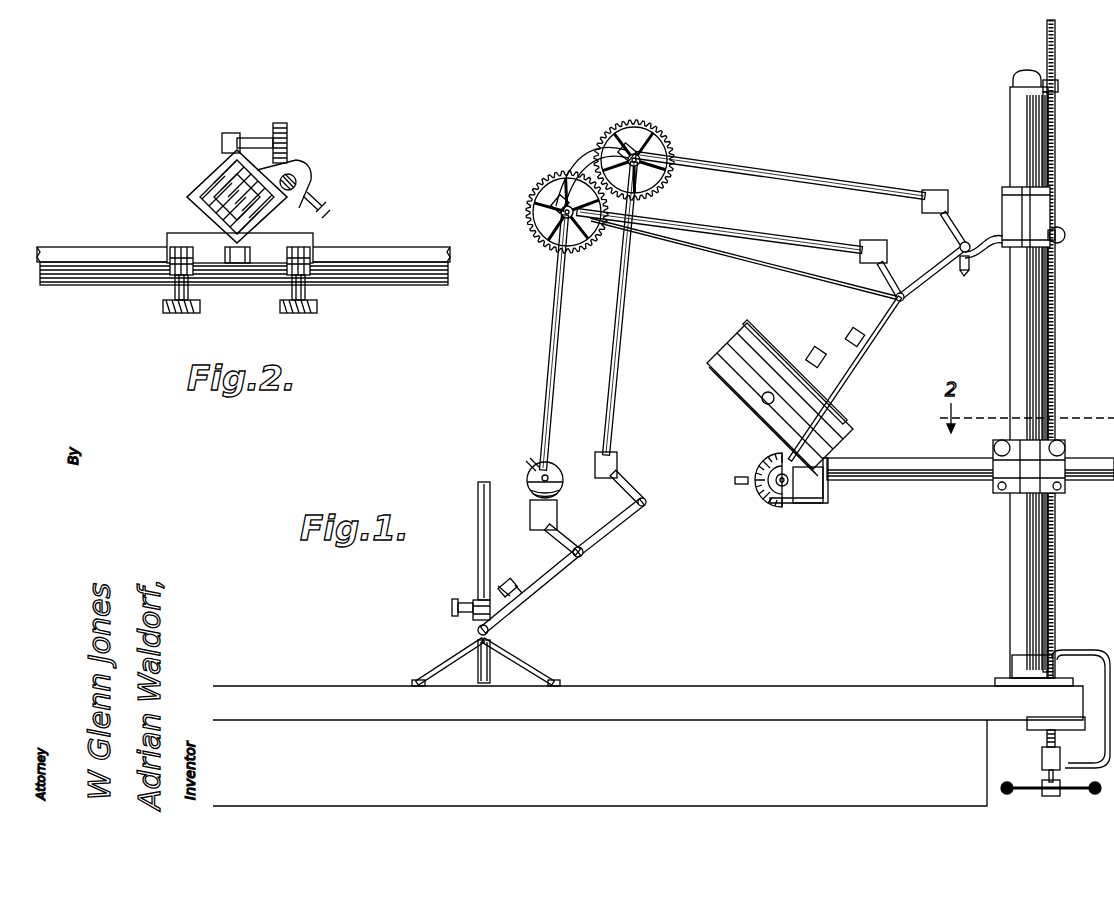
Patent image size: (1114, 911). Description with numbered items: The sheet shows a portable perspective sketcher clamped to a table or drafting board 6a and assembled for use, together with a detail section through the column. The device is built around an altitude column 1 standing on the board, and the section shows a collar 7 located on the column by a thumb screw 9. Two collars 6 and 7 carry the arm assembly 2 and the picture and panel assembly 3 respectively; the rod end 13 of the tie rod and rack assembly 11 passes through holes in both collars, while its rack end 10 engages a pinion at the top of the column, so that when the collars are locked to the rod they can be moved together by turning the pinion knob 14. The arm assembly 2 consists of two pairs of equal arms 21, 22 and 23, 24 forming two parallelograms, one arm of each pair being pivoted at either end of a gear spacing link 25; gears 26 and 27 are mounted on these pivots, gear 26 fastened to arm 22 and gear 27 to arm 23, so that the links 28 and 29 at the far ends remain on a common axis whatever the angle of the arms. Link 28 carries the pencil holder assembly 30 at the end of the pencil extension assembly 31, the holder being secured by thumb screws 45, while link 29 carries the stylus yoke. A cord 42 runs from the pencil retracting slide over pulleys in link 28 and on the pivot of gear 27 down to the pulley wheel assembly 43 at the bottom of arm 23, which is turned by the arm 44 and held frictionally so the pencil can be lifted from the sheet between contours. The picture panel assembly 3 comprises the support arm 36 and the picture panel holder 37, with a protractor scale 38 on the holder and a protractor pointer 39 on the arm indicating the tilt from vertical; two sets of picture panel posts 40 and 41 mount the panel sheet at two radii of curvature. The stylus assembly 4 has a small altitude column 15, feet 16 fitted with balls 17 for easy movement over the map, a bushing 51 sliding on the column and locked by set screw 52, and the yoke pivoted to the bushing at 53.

In FIG. 2, the altitude column 1 is at (226, 176).
In FIG. 1, the altitude column 1 is at (1013, 563).
In FIG. 1, the arm assembly 2 is at (763, 224).
In FIG. 1, the picture and panel assembly 3 is at (880, 460).
In FIG. 1, the stylus assembly 4 is at (500, 650).
In FIG. 1, the collar 6 is at (1052, 205).
In FIG. 1, the table or drafting board 6a is at (918, 686).
In FIG. 2, the collar 7 is at (178, 240).
In FIG. 1, the collar 7 is at (1068, 462).
In FIG. 2, the thumb screw 9 is at (287, 143).
In FIG. 1, the rack end 10 is at (1056, 122).
In FIG. 1, the tie rod and rack assembly 11 is at (1060, 230).
In FIG. 2, the rod end 13 is at (297, 178).
In FIG. 1, the rod end 13 is at (1060, 388).
In FIG. 1, the pinion knob 14 is at (1028, 72).
In FIG. 1, the small altitude column 15 is at (478, 525).
In FIG. 1, the feet 16 is at (478, 676).
In FIG. 1, the balls 17 is at (550, 686).
In FIG. 1, the arm 21 is at (818, 218).
In FIG. 1, the arm 22 is at (820, 178).
In FIG. 1, the arm 23 is at (560, 343).
In FIG. 1, the arm 24 is at (628, 343).
In FIG. 1, the gear spacing link 25 is at (572, 163).
In FIG. 1, the gear 26 is at (652, 127).
In FIG. 1, the gear 27 is at (527, 212).
In FIG. 1, the link 28 is at (925, 275).
In FIG. 1, the link 29 is at (612, 540).
In FIG. 1, the pencil holder assembly 30 is at (768, 385).
In FIG. 1, the pencil extension assembly 31 is at (808, 362).
In FIG. 2, the support arm 36 is at (388, 247).
In FIG. 1, the support arm 36 is at (930, 470).
In FIG. 1, the picture panel holder 37 is at (757, 428).
In FIG. 1, the protractor scale 38 is at (752, 468).
In FIG. 1, the protractor pointer 39 is at (740, 485).
In FIG. 1, the picture panel posts 40 is at (750, 326).
In FIG. 1, the picture panel posts 41 is at (792, 306).
In FIG. 1, the cord 42 is at (778, 262).
In FIG. 1, the pulley wheel assembly 43 is at (565, 477).
In FIG. 1, the arm 44 is at (527, 460).
In FIG. 1, the thumb screws 45 is at (774, 400).
In FIG. 1, the bushing 51 is at (473, 614).
In FIG. 1, the set screw 52 is at (456, 606).
In FIG. 1, the pivot 53 is at (478, 633).